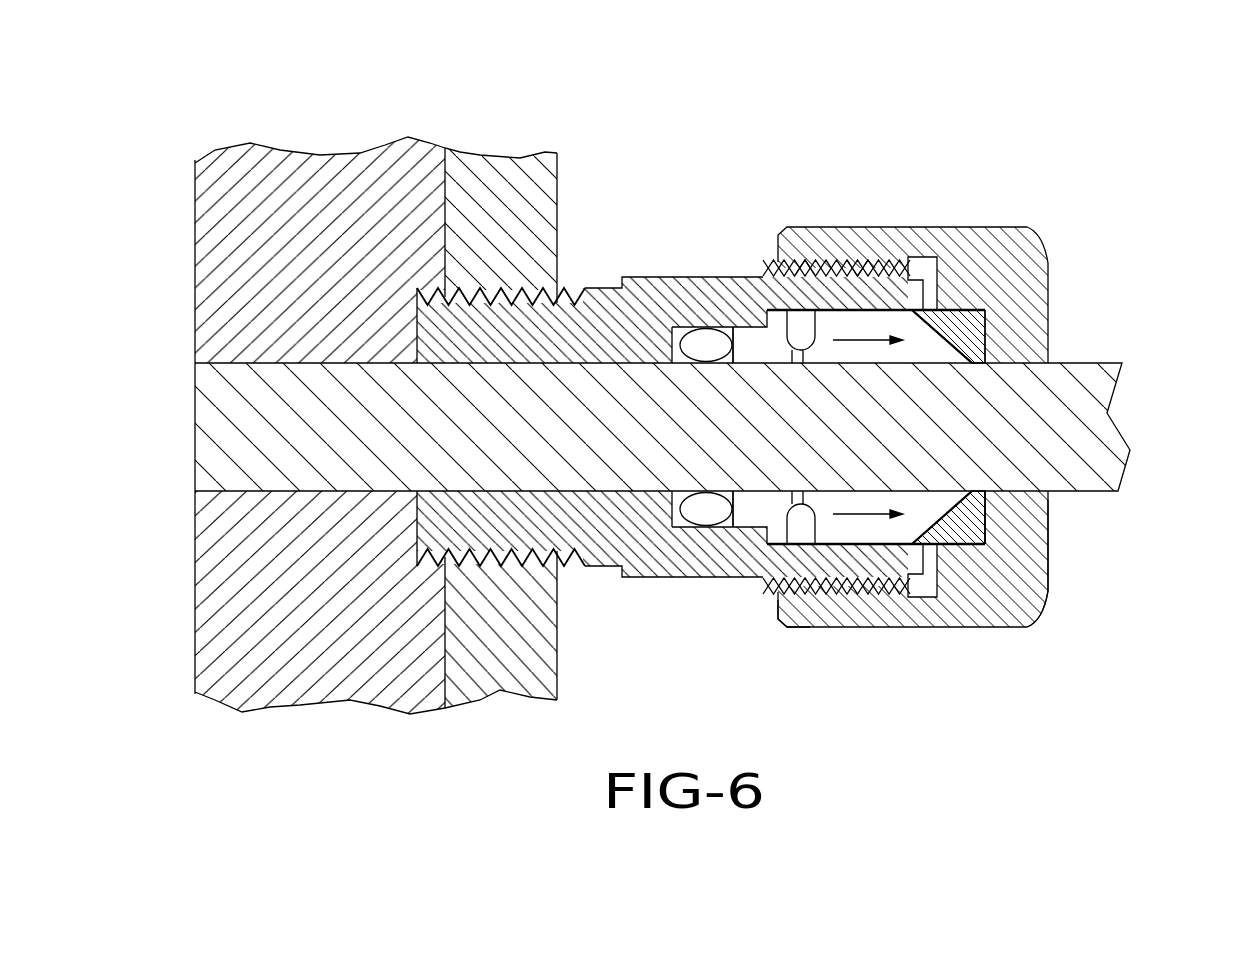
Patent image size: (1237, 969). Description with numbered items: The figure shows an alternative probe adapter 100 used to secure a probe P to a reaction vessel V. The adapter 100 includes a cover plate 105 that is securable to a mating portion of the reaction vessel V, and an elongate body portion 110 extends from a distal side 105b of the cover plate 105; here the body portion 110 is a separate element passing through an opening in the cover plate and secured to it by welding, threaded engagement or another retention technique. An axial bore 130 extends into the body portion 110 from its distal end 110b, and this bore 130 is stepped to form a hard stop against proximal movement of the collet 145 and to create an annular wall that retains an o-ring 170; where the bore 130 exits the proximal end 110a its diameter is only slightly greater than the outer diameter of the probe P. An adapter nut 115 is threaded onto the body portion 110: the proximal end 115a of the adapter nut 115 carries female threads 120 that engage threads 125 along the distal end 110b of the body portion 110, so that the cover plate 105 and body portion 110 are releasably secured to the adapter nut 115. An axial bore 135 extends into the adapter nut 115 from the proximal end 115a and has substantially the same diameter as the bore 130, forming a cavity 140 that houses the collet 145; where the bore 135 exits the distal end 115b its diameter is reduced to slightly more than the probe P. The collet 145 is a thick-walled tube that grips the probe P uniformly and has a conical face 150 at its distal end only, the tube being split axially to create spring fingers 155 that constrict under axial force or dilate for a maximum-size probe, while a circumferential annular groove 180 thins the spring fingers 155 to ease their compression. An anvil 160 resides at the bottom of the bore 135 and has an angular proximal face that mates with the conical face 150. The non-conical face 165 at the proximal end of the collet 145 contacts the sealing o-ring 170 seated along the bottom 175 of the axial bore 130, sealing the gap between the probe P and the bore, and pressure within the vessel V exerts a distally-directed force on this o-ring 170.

The probe adapter 100 is at (1158, 169).
The reaction vessel V is at (325, 185).
The probe P is at (1075, 393).
The cover plate 105 is at (486, 180).
The distal side of the cover plate 105b is at (540, 183).
The body portion 110 is at (664, 280).
The proximal end of the body portion 110a is at (552, 525).
The distal end of the body portion 110b is at (863, 565).
The adapter nut 115 is at (1008, 262).
The proximal end of the adapter nut 115a is at (802, 608).
The distal end of the adapter nut 115b is at (1018, 568).
The female threads 120 is at (860, 260).
The threads 125 is at (800, 266).
The axial bore 130 is at (760, 518).
The axial bore 135 is at (980, 535).
The cavity 140 is at (768, 318).
The collet 145 is at (928, 338).
The conical face 150 is at (990, 522).
The spring fingers 155 is at (890, 327).
The anvil 160 is at (973, 330).
The non-conical face 165 is at (722, 325).
The o-ring 170 is at (690, 518).
The bottom of the axial bore 175 is at (668, 355).
The circumferential annular groove 180 is at (798, 527).